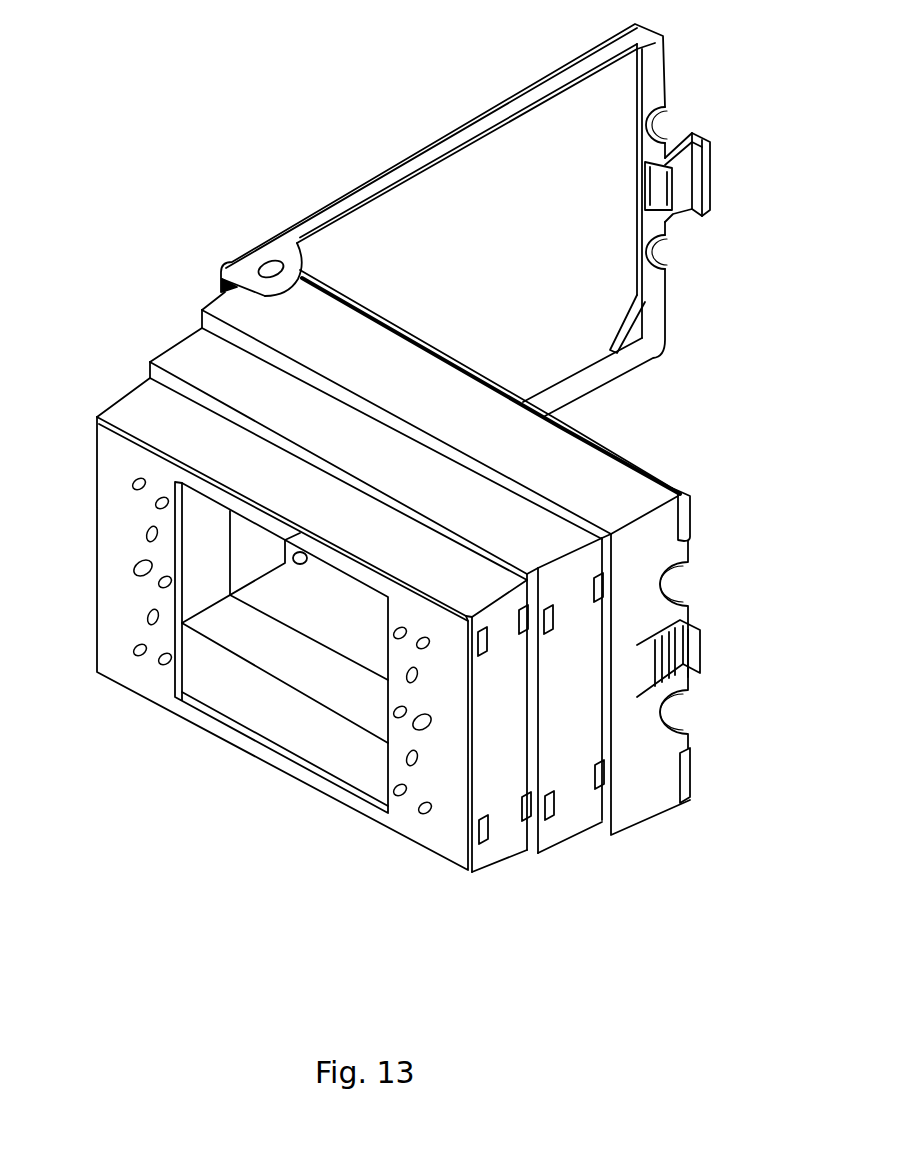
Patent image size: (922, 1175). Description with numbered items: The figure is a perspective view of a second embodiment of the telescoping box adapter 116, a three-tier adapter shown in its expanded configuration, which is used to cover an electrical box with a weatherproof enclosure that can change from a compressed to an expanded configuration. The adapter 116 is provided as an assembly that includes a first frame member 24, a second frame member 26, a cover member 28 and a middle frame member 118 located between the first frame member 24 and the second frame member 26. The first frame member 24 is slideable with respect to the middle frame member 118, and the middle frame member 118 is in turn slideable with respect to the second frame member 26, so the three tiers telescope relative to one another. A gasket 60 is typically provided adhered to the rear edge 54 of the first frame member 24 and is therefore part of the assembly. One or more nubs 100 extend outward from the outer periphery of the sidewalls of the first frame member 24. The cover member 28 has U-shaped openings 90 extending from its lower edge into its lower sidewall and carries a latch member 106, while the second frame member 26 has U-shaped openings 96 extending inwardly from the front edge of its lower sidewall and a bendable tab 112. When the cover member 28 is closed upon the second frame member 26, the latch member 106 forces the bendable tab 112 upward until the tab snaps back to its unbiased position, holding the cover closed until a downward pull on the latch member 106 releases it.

The telescoping box adapter 116 is at (143, 212).
The cover member 28 is at (432, 140).
The latch member 106 is at (713, 178).
The U-shaped openings 90 is at (660, 247).
The gasket 60 is at (125, 434).
The rear edge 54 is at (160, 444).
The first frame member 24 is at (310, 505).
The middle frame member 118 is at (380, 455).
The second frame member 26 is at (445, 414).
The U-shaped openings 96 is at (672, 588).
The bendable tab 112 is at (705, 650).
The nubs 100 is at (485, 840).